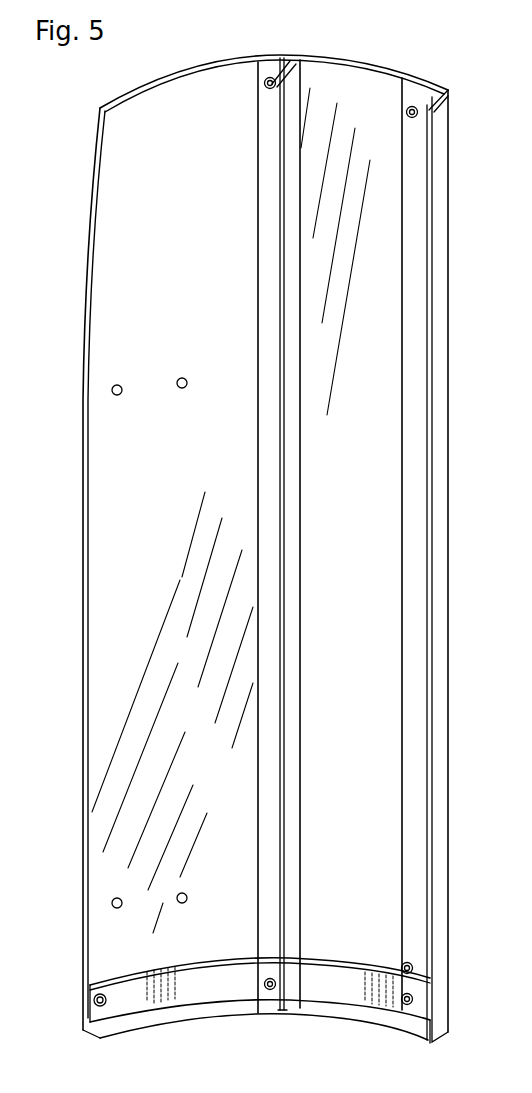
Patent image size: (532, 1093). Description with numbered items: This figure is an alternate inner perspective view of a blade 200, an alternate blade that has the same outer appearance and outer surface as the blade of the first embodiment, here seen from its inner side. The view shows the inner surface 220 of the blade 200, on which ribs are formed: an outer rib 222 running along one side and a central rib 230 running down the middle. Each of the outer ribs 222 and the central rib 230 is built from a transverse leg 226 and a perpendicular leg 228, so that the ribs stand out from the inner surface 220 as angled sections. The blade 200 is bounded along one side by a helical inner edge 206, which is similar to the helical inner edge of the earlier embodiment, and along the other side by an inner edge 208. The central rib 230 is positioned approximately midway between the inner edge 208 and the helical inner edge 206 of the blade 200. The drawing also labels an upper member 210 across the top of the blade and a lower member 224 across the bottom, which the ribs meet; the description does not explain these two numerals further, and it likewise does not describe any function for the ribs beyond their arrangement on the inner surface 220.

The blade 200 is at (467, 926).
The helical inner edge 206 is at (85, 352).
The inner edge 208 is at (452, 347).
The top frame member 210 is at (205, 62).
The inner surface 220 is at (115, 503).
The outer rib 222 is at (440, 612).
The bottom frame member 224 is at (215, 1005).
The transverse leg 226 is at (282, 58).
The perpendicular leg 228 is at (310, 62).
The central rib 230 is at (270, 405).